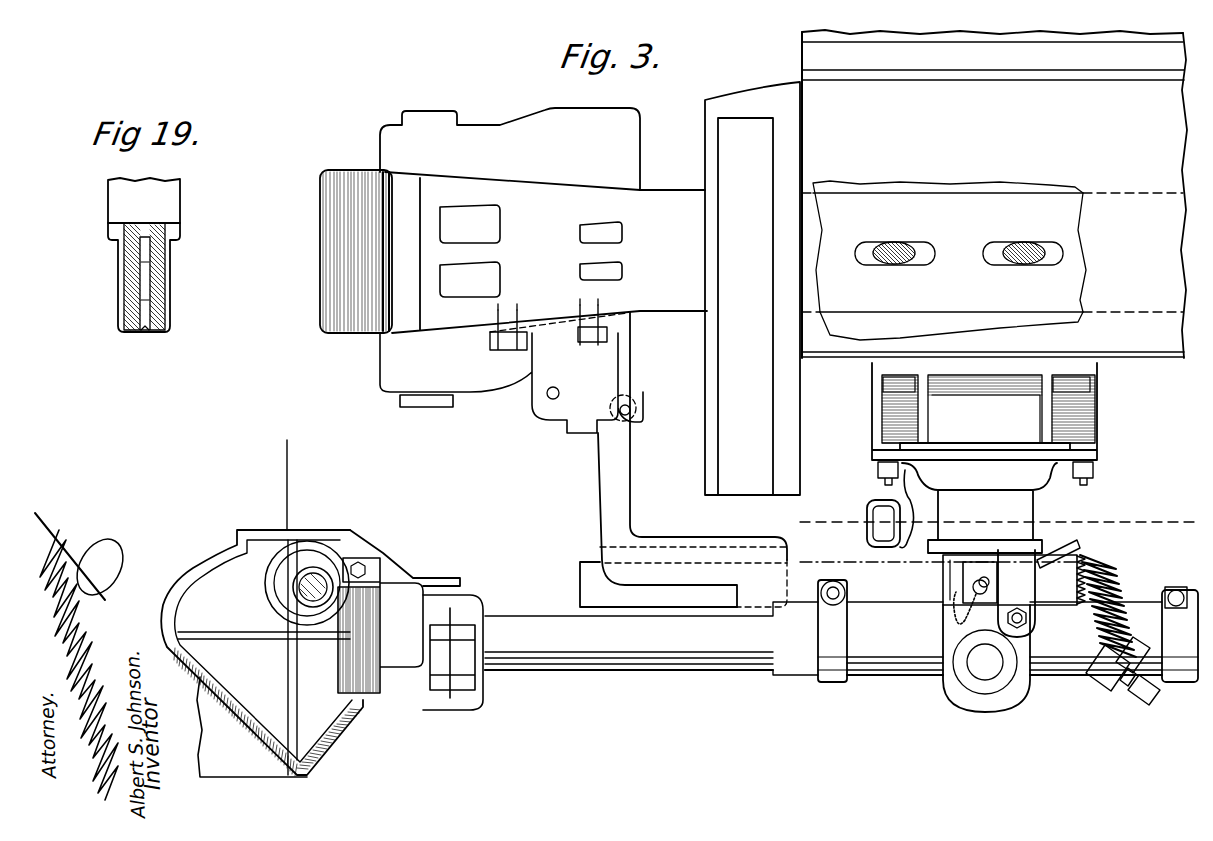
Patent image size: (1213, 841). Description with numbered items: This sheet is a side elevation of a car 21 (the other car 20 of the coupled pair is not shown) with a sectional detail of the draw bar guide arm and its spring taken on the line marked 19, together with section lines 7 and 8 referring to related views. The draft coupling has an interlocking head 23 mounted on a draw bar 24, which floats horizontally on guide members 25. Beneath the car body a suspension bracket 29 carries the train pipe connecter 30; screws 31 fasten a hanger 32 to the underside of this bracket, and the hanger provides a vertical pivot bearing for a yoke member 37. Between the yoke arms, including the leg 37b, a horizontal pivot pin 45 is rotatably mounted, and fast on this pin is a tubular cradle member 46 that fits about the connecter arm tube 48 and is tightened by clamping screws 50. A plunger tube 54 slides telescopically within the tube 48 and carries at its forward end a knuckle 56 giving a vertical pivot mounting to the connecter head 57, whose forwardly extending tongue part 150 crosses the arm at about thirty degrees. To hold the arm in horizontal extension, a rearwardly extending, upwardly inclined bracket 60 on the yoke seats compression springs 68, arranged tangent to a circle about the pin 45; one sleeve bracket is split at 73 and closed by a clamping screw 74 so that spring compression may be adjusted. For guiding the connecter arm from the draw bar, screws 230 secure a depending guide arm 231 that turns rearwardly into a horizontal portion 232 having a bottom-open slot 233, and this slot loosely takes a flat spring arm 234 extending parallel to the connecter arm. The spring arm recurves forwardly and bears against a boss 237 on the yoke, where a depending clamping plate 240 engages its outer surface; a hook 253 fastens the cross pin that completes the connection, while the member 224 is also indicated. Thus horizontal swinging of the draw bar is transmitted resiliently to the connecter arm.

In FIG. 3, the car 21 is at (790, 56).
In FIG. 3, the interlocking head 23 is at (542, 149).
In FIG. 3, the draw bar 24 is at (513, 301).
In FIG. 3, the guide member 25 is at (1012, 242).
In FIG. 3, the suspension bracket 29 is at (1097, 412).
In FIG. 3, the screw 31 is at (1115, 464).
In FIG. 3, the hanger 32 is at (979, 508).
In FIG. 3, the loop 224 is at (867, 505).
In FIG. 3, the screw 230 is at (590, 345).
In FIG. 19, the guide arm 231 is at (170, 210).
In FIG. 3, the guide arm 231 is at (598, 475).
In FIG. 19, the rearward horizontal arm portion 232 is at (125, 288).
In FIG. 3, the rearward horizontal arm portion 232 is at (668, 545).
In FIG. 19, the slot 233 is at (145, 250).
In FIG. 19, the arm 234 is at (150, 292).
In FIG. 3, the arm 234 is at (802, 572).
In FIG. 3, the hook 253 is at (981, 580).
In FIG. 3, the bracket 60 is at (1080, 548).
In FIG. 3, the boss 237 is at (1090, 578).
In FIG. 3, the compression spring 68 is at (1112, 605).
In FIG. 3, the clamping screw 50 is at (1180, 587).
In FIG. 3, the clamping plate 240 is at (1016, 593).
In FIG. 3, the car 20 is at (1018, 652).
In FIG. 3, the yoke member 37 is at (936, 577).
In FIG. 3, the yoke arm 37b is at (945, 625).
In FIG. 3, the pivot pin 45 is at (986, 658).
In FIG. 3, the cradle member 46 is at (920, 675).
In FIG. 3, the connecter arm tube 48 is at (812, 670).
In FIG. 3, the plunger tube 54 is at (651, 638).
In FIG. 3, the knuckle 56 is at (482, 606).
In FIG. 3, the connecter head 57 is at (383, 550).
In FIG. 3, the tongue part 150 is at (262, 608).
In FIG. 3, the train pipe connecter 30 is at (639, 681).
In FIG. 3, the split 73 is at (1130, 690).
In FIG. 3, the clamping screw 74 is at (1095, 683).
In FIG. 3, the section line 7 is at (717, 575).
In FIG. 3, the section line 8 is at (1156, 720).
In FIG. 3, the section line 19 is at (750, 627).